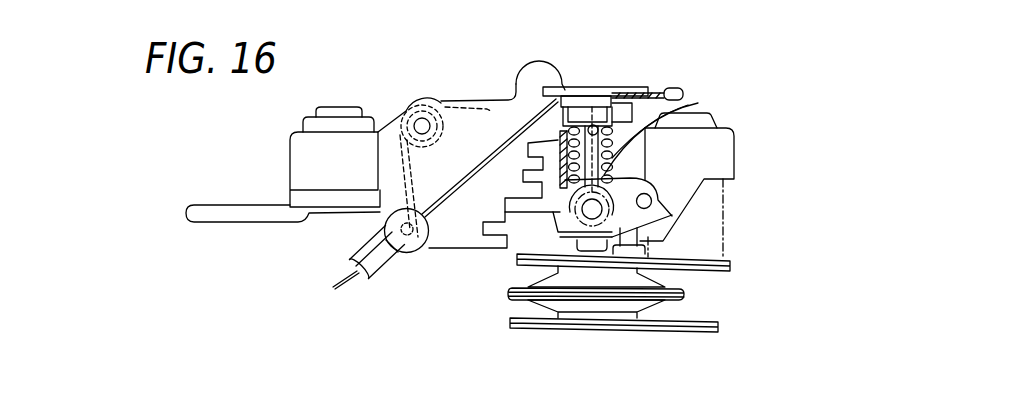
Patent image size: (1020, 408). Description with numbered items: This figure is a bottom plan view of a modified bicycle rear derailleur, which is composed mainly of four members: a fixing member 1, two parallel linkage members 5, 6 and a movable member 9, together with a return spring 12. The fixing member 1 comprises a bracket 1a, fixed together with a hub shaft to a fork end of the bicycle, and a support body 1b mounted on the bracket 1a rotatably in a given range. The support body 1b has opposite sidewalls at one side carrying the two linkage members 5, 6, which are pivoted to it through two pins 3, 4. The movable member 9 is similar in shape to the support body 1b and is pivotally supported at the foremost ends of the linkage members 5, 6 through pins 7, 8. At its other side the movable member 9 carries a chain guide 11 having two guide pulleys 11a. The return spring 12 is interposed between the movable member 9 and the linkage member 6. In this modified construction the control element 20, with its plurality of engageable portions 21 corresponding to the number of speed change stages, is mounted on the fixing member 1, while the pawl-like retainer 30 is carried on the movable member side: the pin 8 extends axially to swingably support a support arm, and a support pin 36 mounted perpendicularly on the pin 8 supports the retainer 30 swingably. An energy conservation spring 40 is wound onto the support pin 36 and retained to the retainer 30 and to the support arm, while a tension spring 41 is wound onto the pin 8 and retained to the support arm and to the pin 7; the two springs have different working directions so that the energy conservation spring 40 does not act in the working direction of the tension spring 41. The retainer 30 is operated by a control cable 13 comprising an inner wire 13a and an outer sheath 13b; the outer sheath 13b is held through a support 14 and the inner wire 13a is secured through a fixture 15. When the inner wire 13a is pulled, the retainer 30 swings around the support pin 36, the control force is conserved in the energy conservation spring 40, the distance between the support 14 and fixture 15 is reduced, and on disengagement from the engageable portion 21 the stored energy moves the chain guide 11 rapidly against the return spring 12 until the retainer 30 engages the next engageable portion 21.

The fixing member 1 is at (283, 164).
The bracket 1a is at (283, 188).
The support body 1b is at (297, 150).
The pin 3 is at (423, 117).
The pin 4 is at (409, 260).
The linkage member 5 is at (490, 100).
The linkage member 6 is at (527, 222).
The pin 7 is at (624, 92).
The pin 8 is at (592, 215).
The movable member 9 is at (722, 157).
The chain guide 11 is at (730, 263).
The guide pulley 11a is at (684, 293).
The return spring 12 is at (400, 110).
The control cable 13 is at (356, 316).
The inner wire 13a is at (347, 292).
The outer sheath 13b is at (386, 278).
The support 14 is at (422, 242).
The fixture 15 is at (604, 99).
The control element 20 is at (540, 74).
The engageable portion 21 is at (566, 87).
The retainer 30 is at (584, 110).
The support pin 36 is at (656, 105).
The energy conservation spring 40 is at (698, 102).
The tension spring 41 is at (617, 245).